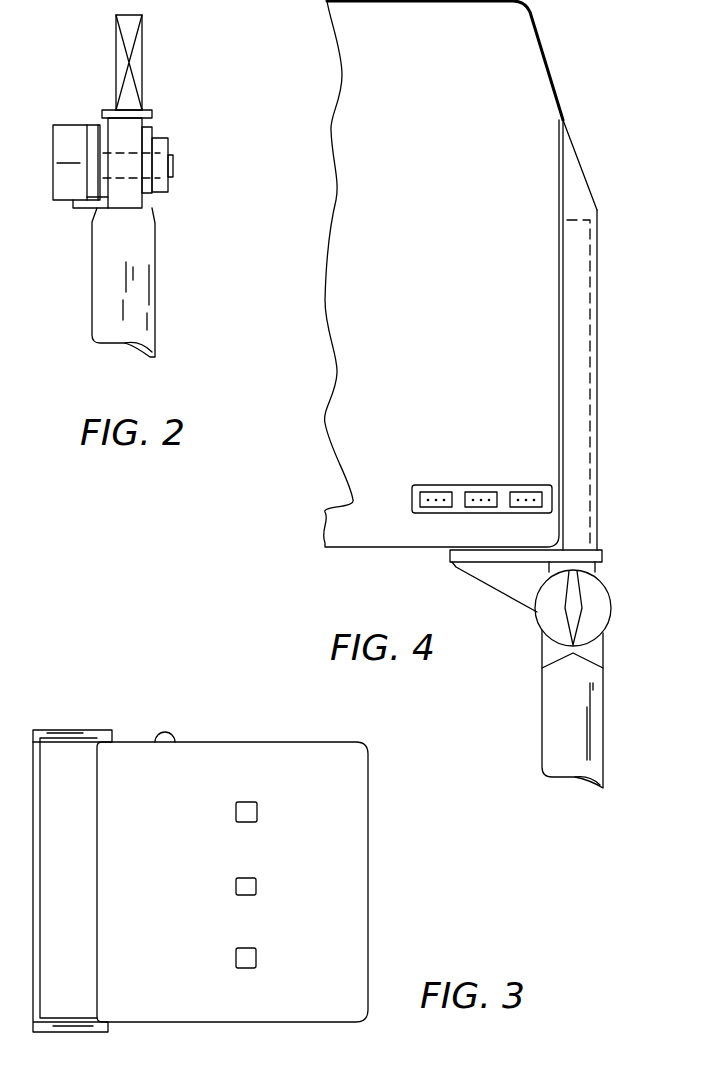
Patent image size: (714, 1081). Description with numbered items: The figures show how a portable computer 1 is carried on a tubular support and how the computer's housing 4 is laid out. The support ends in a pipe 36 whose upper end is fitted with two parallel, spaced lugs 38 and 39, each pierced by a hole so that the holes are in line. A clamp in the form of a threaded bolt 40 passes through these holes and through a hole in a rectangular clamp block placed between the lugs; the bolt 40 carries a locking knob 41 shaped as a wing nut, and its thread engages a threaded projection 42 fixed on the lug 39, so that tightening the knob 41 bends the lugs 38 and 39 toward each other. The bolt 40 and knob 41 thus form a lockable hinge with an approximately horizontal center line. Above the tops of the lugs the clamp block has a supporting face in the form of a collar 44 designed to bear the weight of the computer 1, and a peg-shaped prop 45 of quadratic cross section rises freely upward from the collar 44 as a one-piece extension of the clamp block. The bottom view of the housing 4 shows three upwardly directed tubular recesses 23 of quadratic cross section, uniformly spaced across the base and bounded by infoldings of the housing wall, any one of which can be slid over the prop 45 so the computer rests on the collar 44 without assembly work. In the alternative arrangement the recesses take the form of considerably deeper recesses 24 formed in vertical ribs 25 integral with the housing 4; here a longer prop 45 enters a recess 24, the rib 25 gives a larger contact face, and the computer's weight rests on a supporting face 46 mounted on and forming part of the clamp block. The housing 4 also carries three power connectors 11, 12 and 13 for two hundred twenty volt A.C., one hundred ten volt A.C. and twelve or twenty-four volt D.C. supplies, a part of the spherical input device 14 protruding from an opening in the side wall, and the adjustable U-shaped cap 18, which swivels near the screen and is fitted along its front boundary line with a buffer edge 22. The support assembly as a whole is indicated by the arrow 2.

In FIG. 4, the computer 1 is at (349, 226).
In FIG. 3, the computer 1 is at (303, 768).
In FIG. 2, the plug unit 2 is at (84, 305).
In FIG. 4, the plug unit 2 is at (528, 751).
In FIG. 4, the housing 4 is at (533, 310).
In FIG. 4, the connector 11 is at (428, 493).
In FIG. 4, the connector 12 is at (482, 492).
In FIG. 2, the connector 13 is at (132, 190).
In FIG. 4, the connector 13 is at (527, 492).
In FIG. 3, the spherical input device 14 is at (170, 735).
In FIG. 3, the cap 18 is at (76, 860).
In FIG. 3, the buffer edge 22 is at (72, 730).
In FIG. 3, the tubular recess 23 is at (236, 818).
In FIG. 4, the recess 24 is at (587, 410).
In FIG. 4, the vertical rib 25 is at (573, 200).
In FIG. 2, the pipe 36 is at (148, 305).
In FIG. 4, the pipe 36 is at (552, 708).
In FIG. 2, the lug 38 is at (75, 207).
In FIG. 2, the lug 39 is at (152, 132).
In FIG. 2, the threaded bolt 40 is at (175, 167).
In FIG. 2, the locking knob 41 is at (60, 147).
In FIG. 4, the locking knob 41 is at (611, 607).
In FIG. 2, the projection 42 is at (167, 148).
In FIG. 2, the collar 44 is at (108, 110).
In FIG. 2, the prop 45 is at (142, 43).
In FIG. 4, the supporting face 46 is at (493, 555).